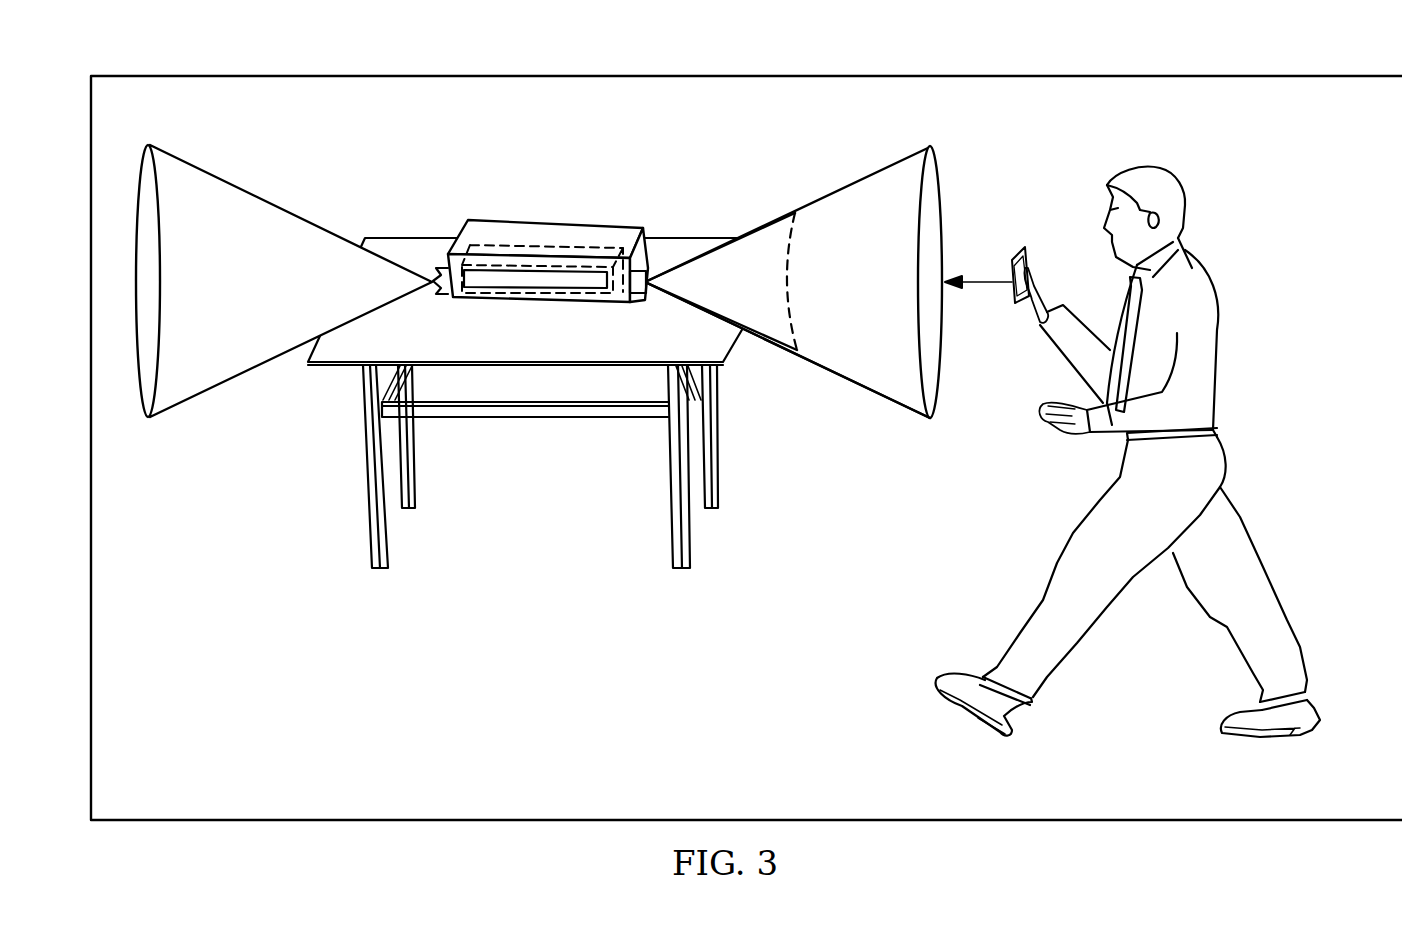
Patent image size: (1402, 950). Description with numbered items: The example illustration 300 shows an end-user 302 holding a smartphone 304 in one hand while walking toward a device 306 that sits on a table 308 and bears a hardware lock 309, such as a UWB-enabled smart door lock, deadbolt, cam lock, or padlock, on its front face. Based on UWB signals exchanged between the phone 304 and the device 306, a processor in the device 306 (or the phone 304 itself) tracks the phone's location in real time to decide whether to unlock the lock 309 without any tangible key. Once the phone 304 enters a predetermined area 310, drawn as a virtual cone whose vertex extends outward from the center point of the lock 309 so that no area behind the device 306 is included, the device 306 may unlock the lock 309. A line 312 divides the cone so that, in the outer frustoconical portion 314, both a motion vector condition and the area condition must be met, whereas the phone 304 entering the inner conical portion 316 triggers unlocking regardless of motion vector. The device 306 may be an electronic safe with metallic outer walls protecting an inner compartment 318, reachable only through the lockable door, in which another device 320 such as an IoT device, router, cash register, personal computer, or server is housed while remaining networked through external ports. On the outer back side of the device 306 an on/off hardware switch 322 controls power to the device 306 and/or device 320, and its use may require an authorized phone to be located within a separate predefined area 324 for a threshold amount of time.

The example illustration 300 is at (131, 54).
The end-user 302 is at (1185, 198).
The smartphone 304 is at (1020, 245).
The device 306 is at (583, 223).
The table 308 is at (668, 466).
The hardware lock 309 is at (635, 298).
The predetermined area 310 is at (860, 180).
The line 312 is at (788, 282).
The outer frustoconical portion 314 is at (862, 372).
The inner conical portion 316 is at (721, 281).
The inner compartment 318 is at (545, 292).
The other device 320 is at (515, 275).
The on/off hardware switch 322 is at (445, 296).
The separate predefined area 324 is at (260, 193).